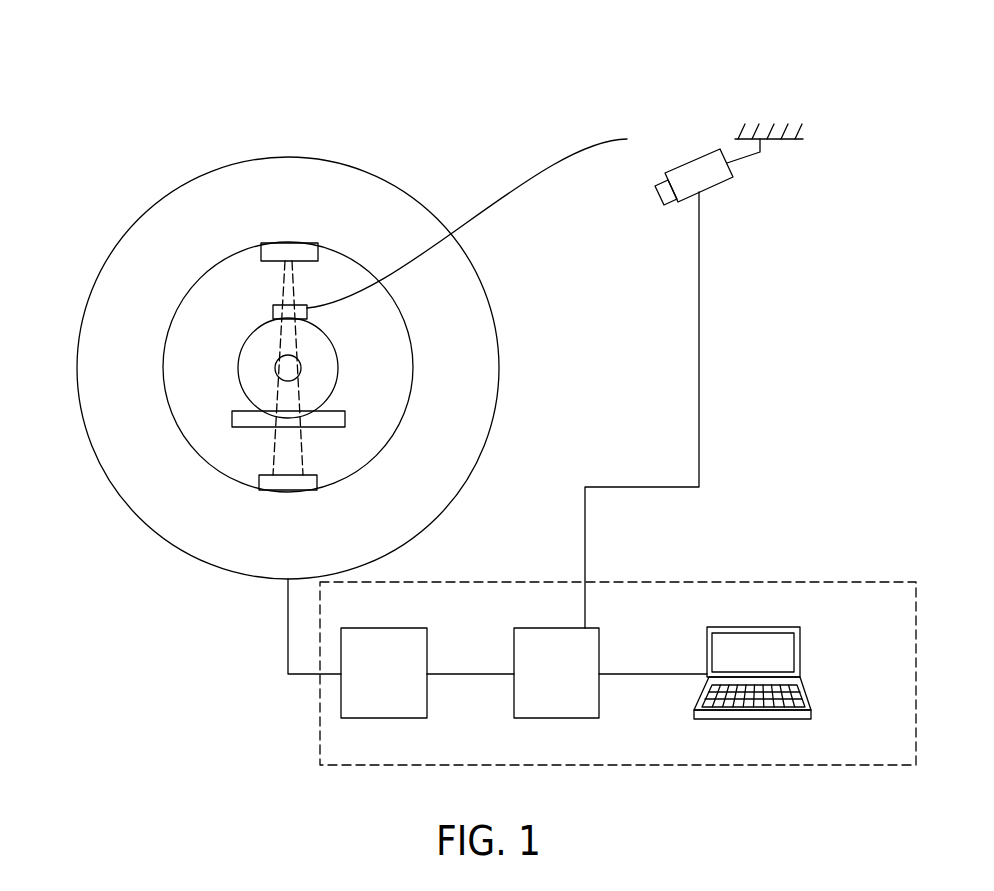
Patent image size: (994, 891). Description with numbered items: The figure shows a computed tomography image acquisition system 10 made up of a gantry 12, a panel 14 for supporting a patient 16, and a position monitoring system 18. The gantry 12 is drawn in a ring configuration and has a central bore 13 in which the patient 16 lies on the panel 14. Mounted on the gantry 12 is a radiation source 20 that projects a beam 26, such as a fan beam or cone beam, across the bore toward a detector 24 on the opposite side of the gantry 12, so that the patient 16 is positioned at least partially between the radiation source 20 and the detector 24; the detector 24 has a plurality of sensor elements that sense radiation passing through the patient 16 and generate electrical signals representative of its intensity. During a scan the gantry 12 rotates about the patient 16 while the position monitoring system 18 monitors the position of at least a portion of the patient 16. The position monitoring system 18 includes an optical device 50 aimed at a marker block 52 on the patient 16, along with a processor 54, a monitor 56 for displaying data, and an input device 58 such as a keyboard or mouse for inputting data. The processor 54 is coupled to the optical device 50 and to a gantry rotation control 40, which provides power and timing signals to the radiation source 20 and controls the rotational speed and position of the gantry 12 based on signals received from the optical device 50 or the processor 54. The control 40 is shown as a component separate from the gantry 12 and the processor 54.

The computed tomography image acquisition system 10 is at (620, 57).
The gantry 12 is at (463, 267).
The bore 13 is at (397, 367).
The panel 14 is at (340, 427).
The patient 16 is at (337, 380).
The position monitoring system 18 is at (673, 168).
The radiation source 20 is at (293, 250).
The detector 24 is at (262, 472).
The beam 26 is at (293, 290).
The gantry rotation control 40 is at (370, 685).
The optical device 50 is at (724, 183).
The marker block 52 is at (273, 312).
The processor 54 is at (543, 685).
The monitor 56 is at (803, 657).
The input device 58 is at (810, 702).